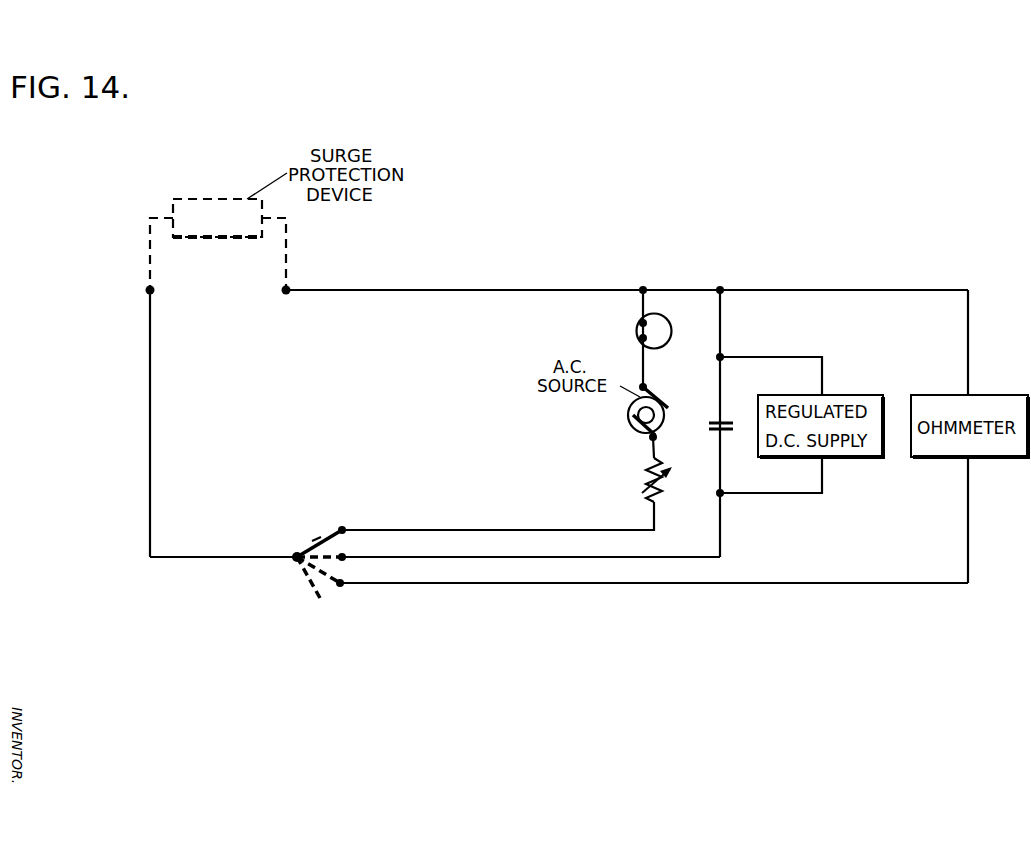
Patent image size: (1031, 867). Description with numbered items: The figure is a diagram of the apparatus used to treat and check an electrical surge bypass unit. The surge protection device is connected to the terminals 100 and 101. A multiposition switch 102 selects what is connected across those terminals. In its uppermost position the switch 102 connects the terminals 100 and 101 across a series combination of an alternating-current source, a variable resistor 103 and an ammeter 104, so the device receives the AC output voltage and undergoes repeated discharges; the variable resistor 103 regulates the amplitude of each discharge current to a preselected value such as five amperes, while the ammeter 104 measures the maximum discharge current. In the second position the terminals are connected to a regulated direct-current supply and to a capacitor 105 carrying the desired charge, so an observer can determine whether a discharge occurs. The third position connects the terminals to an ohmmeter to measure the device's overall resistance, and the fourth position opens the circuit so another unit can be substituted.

The terminal 100 is at (150, 290).
The terminal 101 is at (286, 290).
The multiposition switch 102 is at (315, 540).
The variable resistor 103 is at (650, 474).
The ammeter 104 is at (638, 325).
The capacitor 105 is at (716, 422).